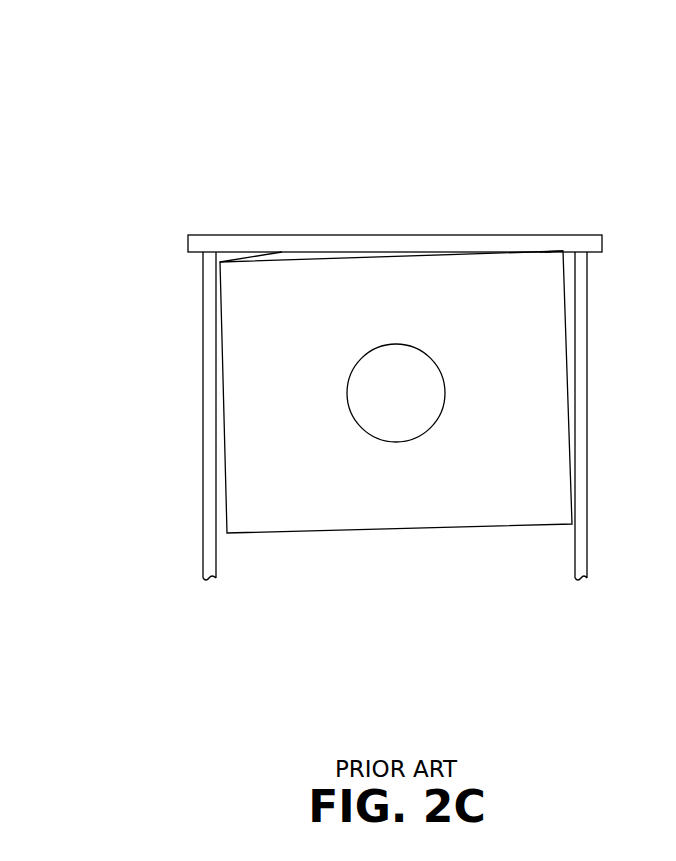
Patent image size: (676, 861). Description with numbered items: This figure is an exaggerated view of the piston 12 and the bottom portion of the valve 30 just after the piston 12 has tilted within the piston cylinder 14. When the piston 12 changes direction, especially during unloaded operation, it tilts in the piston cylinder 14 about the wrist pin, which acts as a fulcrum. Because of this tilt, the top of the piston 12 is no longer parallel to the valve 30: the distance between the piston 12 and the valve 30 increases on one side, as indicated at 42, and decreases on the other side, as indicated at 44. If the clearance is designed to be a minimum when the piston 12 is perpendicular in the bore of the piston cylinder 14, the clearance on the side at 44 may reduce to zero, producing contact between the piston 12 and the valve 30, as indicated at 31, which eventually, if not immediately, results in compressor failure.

The piston 12 is at (488, 345).
The piston cylinder 14 is at (203, 360).
The valve 30 is at (462, 235).
The contact between the piston and the cylinder head and valve 31 is at (549, 246).
The increased clearance side 42 is at (282, 252).
The decreased clearance side 44 is at (555, 250).